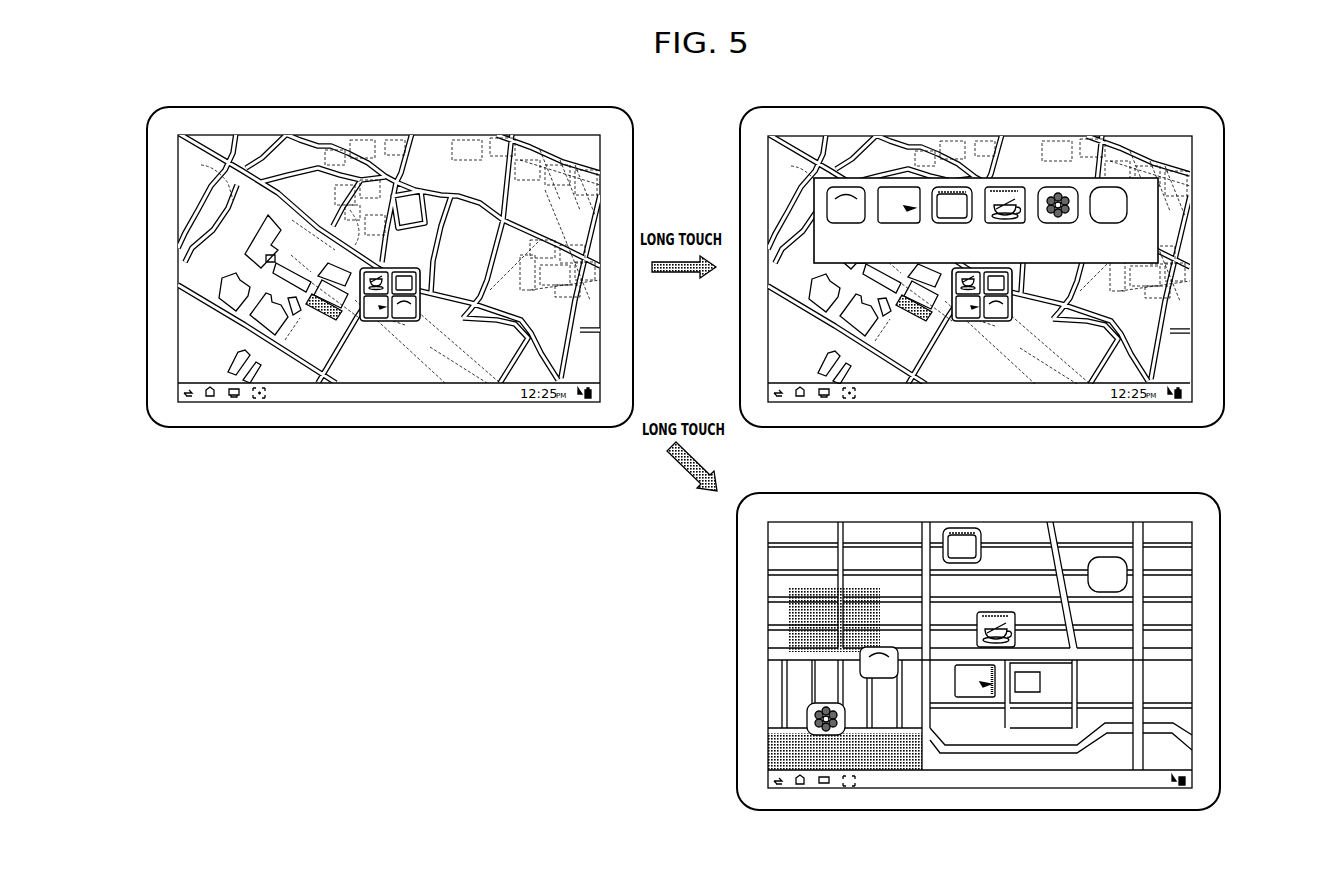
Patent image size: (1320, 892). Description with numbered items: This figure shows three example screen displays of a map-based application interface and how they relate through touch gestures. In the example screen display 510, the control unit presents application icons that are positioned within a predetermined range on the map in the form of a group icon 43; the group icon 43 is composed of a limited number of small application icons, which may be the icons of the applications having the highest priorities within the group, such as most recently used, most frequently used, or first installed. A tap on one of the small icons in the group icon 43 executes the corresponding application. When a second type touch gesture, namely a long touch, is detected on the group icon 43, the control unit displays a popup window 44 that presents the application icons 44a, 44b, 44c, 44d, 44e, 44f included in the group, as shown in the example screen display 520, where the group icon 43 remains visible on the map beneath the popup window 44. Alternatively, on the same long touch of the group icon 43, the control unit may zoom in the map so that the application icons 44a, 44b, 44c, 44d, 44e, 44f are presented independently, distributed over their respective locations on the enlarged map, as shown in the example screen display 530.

The example screen display 510 is at (430, 107).
The example screen display 520 is at (1222, 106).
The example screen display 530 is at (1199, 497).
The group icon 43 is at (388, 321).
The popup window 44 is at (1162, 222).
The application icon 44a is at (845, 187).
The application icon 44b is at (898, 187).
The application icon 44c is at (950, 187).
The application icon 44d is at (1005, 187).
The application icon 44e is at (1060, 187).
The application icon 44f is at (1107, 187).